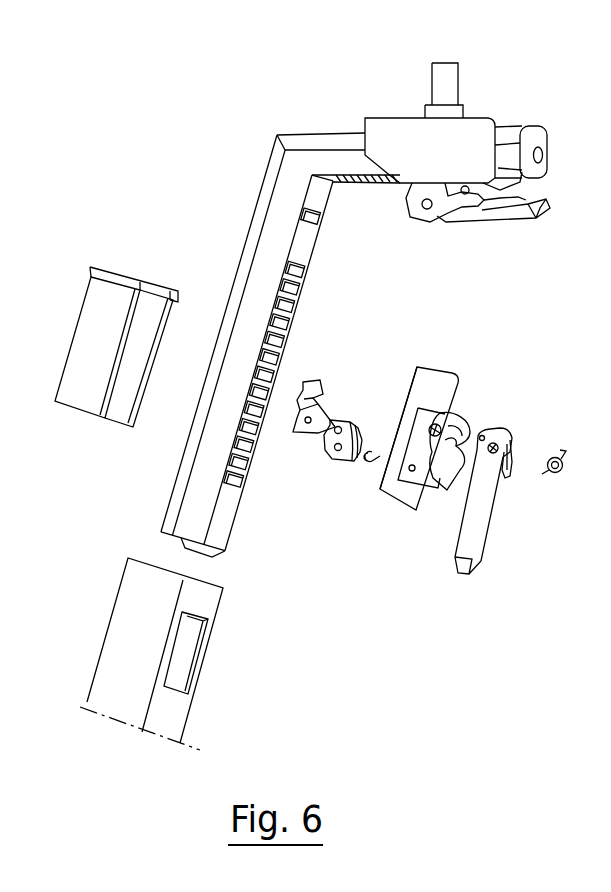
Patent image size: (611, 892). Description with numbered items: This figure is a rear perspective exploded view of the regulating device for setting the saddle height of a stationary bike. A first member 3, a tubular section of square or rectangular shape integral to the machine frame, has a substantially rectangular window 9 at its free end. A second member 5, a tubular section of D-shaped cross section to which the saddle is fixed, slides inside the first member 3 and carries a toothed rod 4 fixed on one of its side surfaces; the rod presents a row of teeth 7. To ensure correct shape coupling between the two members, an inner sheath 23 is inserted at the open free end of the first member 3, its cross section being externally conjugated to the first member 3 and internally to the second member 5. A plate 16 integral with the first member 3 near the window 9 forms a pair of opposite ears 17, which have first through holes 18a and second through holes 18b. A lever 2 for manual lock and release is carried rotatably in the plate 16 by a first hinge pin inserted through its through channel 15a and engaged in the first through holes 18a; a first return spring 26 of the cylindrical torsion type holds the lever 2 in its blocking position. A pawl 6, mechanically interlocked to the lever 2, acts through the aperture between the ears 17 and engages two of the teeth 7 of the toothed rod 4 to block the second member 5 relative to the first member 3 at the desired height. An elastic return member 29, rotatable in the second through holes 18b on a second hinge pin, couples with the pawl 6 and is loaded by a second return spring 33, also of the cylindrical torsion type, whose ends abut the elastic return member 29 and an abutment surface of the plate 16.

The lever 2 is at (487, 540).
The first member 3 is at (221, 641).
The toothed rod 4 is at (302, 238).
The second member 5 is at (239, 186).
The pawl 6 is at (323, 393).
The teeth 7 is at (287, 332).
The window 9 is at (176, 688).
The through channel 15a is at (510, 476).
The plate 16 is at (423, 392).
The ears 17 is at (446, 475).
The first through holes 18a is at (447, 420).
The second through holes 18b is at (415, 492).
The inner sheath 23 is at (97, 378).
The first return spring 26 is at (575, 458).
The elastic return member 29 is at (323, 447).
The second return spring 33 is at (375, 450).